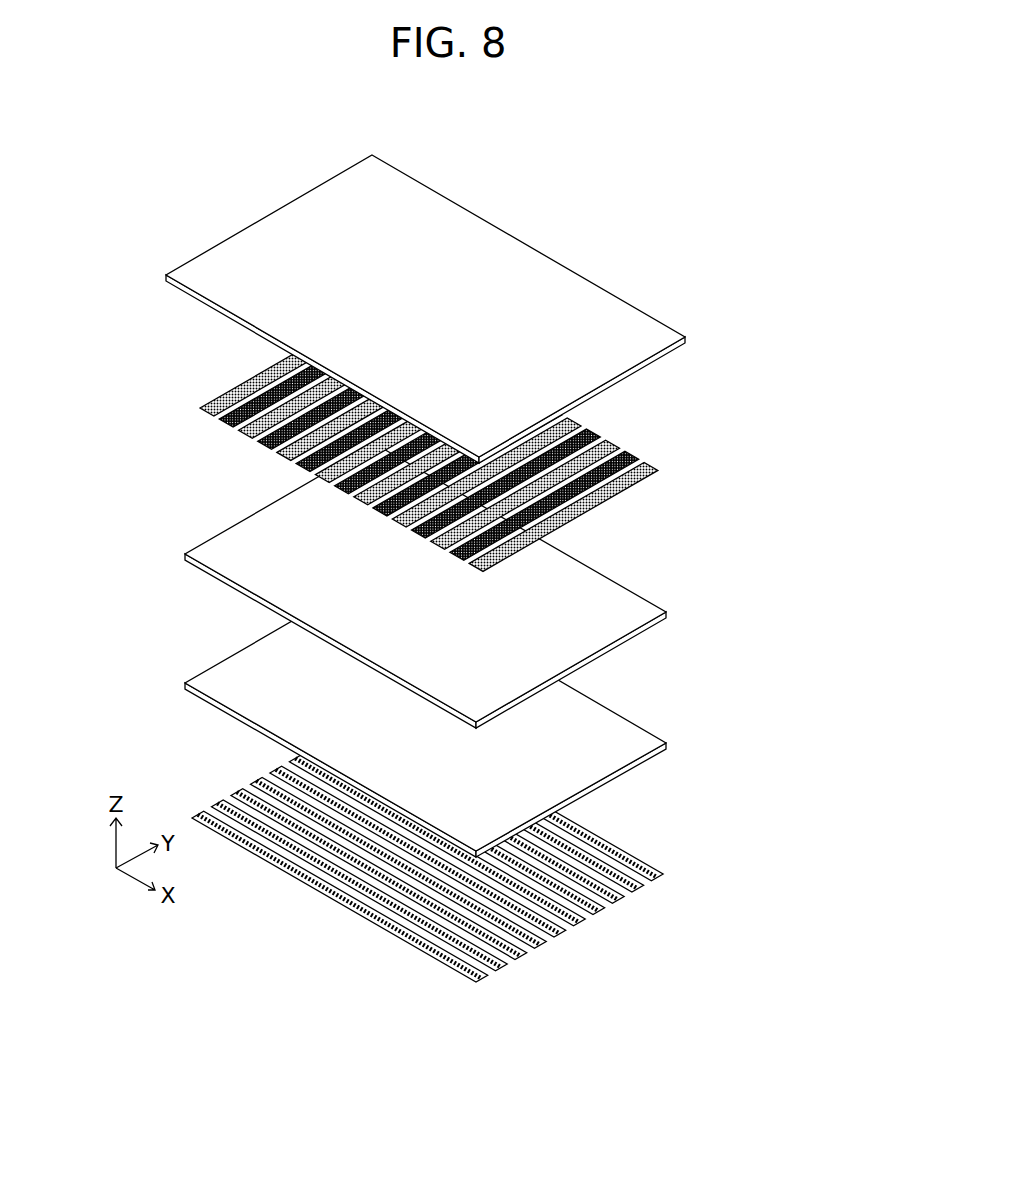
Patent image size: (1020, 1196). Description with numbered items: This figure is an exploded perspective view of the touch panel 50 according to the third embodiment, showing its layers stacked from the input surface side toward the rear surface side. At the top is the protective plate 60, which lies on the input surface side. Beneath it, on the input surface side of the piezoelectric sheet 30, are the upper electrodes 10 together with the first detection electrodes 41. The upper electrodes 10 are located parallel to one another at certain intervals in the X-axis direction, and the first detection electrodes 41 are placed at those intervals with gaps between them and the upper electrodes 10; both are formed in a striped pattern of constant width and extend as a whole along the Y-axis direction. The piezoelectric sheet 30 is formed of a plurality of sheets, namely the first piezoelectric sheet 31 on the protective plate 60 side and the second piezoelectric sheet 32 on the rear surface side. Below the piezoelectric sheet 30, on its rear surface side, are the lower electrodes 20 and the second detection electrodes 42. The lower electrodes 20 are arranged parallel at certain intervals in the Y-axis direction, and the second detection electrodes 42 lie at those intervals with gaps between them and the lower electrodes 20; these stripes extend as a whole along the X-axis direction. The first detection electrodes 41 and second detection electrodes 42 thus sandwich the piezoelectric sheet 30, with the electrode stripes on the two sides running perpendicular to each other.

The touch panel 50 is at (479, 567).
The protective plate 60 is at (603, 289).
The upper electrodes 10 is at (444, 439).
The first detection electrode 41 is at (622, 452).
The piezoelectric sheet 30 is at (489, 650).
The first piezoelectric sheet 31 is at (620, 618).
The second piezoelectric sheet 32 is at (627, 743).
The lower electrodes 20 is at (450, 846).
The second detection electrode 42 is at (647, 883).